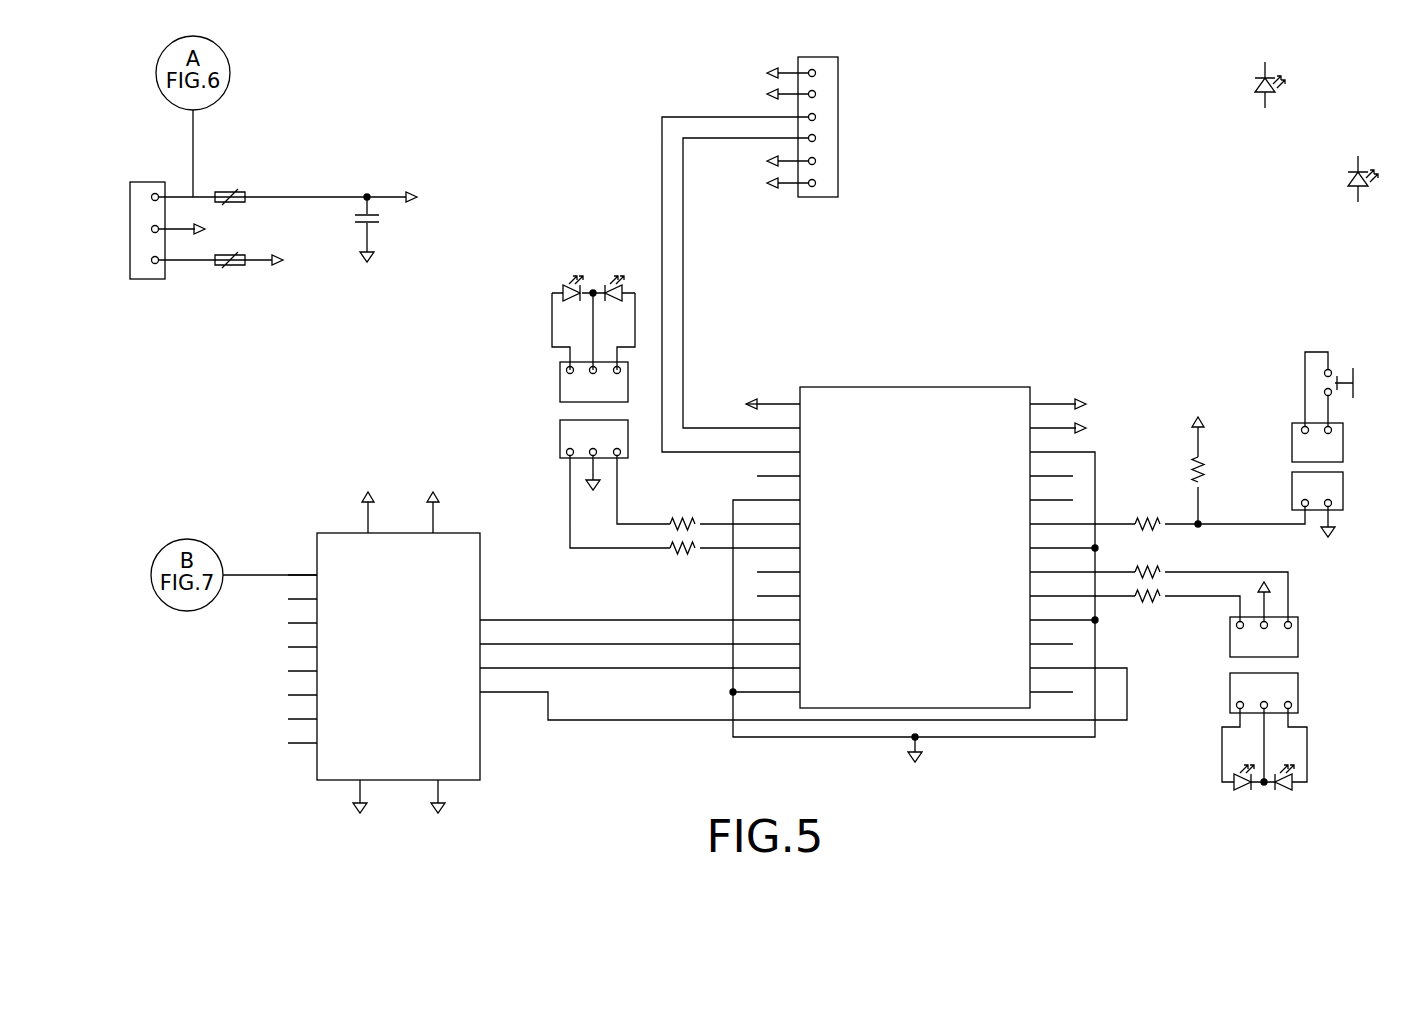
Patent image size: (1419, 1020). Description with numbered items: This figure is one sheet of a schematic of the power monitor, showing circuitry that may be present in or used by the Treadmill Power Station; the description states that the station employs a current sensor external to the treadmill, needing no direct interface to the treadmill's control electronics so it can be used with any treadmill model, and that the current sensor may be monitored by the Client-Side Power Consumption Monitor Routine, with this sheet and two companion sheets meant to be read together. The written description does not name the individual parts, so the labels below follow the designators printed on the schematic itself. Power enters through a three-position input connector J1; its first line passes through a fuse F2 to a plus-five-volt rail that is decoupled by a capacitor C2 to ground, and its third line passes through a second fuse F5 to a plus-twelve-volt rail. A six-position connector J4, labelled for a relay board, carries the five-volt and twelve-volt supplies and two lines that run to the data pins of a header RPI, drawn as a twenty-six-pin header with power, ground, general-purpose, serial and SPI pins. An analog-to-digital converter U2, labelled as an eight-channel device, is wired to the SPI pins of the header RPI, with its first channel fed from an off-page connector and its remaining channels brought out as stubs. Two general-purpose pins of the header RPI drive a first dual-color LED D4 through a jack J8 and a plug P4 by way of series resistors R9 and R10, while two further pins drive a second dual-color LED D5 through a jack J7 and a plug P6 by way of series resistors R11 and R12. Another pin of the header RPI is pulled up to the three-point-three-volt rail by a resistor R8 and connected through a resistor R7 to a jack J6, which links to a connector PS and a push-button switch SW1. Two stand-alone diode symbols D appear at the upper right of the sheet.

The power input connector J1 is at (298, 218).
The fuse 1.2A F2 is at (230, 169).
The fuse .120 MA F5 is at (230, 289).
The capacitor .1 C2 is at (367, 204).
The relay board connector J4 is at (831, 242).
The dual color LED D4 is at (587, 283).
The LED plug connector P4 is at (610, 382).
The LED jack connector J8 is at (658, 484).
The resistor 680 R9 is at (686, 512).
The resistor 680 R10 is at (680, 563).
The Raspberry Pi header RPI is at (808, 563).
The resistor 1K R7 is at (1189, 509).
The pull-up resistor 10K R8 is at (1209, 457).
The resistor 680 R11 is at (1180, 580).
The resistor 680 R12 is at (1156, 611).
The push switch connector PS is at (1336, 442).
The push button switch SW1 is at (1357, 389).
The switch jack connector J6 is at (1333, 504).
The LED jack connector J7 is at (1279, 619).
The LED plug connector P6 is at (1282, 693).
The dual color LED D5 is at (1265, 790).
The MCP3008 analog-to-digital converter U2 is at (400, 638).
The light emitting diode D is at (1320, 124).